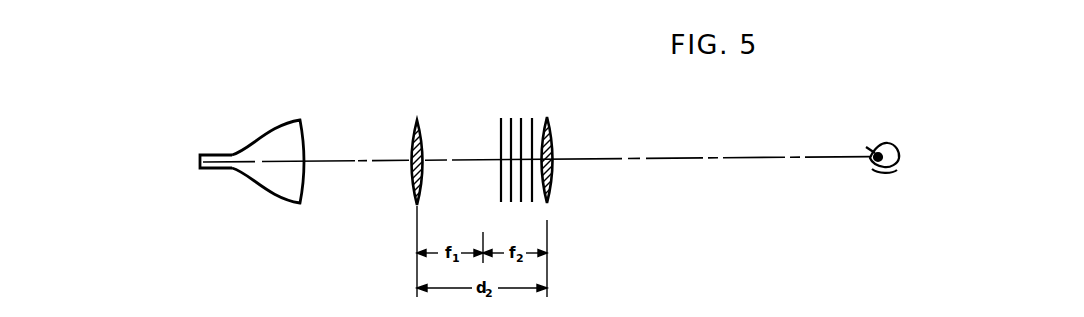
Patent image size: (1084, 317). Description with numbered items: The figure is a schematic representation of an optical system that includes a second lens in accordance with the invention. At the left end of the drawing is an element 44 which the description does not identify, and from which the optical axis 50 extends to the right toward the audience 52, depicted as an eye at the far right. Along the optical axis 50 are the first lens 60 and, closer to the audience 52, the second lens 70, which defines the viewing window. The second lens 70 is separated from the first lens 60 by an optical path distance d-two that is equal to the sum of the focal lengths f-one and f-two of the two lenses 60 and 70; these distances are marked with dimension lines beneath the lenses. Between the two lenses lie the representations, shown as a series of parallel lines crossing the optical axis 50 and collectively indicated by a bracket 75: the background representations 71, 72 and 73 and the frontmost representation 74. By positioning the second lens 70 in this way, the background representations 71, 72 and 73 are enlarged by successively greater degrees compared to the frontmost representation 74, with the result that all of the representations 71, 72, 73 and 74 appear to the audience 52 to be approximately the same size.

The cathode ray tube 44 is at (270, 187).
The optical axis 50 is at (692, 158).
The audience 52 is at (882, 173).
The first lens 60 is at (411, 130).
The second lens 70 is at (550, 127).
The background representation 71 is at (521, 203).
The background representation 72 is at (511, 199).
The background representation 73 is at (500, 188).
The frontmost representation 74 is at (532, 203).
The plate assembly 75 is at (516, 148).